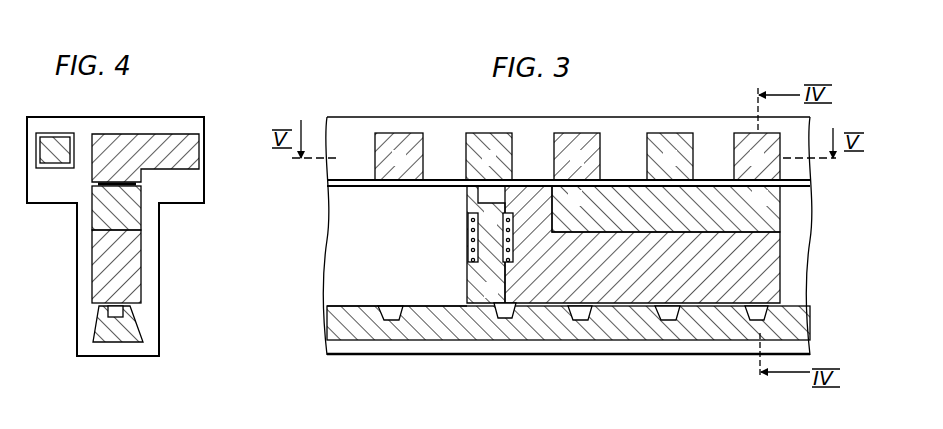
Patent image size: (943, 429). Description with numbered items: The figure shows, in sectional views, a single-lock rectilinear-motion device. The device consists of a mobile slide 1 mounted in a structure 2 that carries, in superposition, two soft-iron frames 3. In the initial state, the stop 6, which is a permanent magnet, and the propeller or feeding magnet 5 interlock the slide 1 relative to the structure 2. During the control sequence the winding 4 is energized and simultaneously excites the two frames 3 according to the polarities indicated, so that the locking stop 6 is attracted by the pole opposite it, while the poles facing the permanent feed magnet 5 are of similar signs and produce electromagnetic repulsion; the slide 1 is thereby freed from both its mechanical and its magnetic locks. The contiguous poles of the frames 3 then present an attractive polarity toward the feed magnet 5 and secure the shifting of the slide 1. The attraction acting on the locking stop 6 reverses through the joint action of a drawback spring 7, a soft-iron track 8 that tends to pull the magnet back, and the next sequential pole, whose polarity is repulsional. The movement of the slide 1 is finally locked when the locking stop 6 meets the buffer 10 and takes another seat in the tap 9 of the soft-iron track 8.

In FIG. 3, the mobile slide 1 is at (687, 293).
In FIG. 4, the structure 2 is at (99, 347).
In FIG. 4, the soft-iron frames 3 is at (125, 148).
In FIG. 3, the soft-iron frames 3 is at (562, 137).
In FIG. 4, the winding 4 is at (50, 176).
In FIG. 4, the propeller or feeding magnet 5 is at (128, 210).
In FIG. 3, the propeller or feeding magnet 5 is at (602, 212).
In FIG. 3, the stop 6 is at (510, 295).
In FIG. 3, the drawback spring 7 is at (466, 252).
In FIG. 4, the soft-iron track 8 is at (120, 343).
In FIG. 4, the tap 9 is at (122, 311).
In FIG. 3, the buffer 10 is at (387, 304).